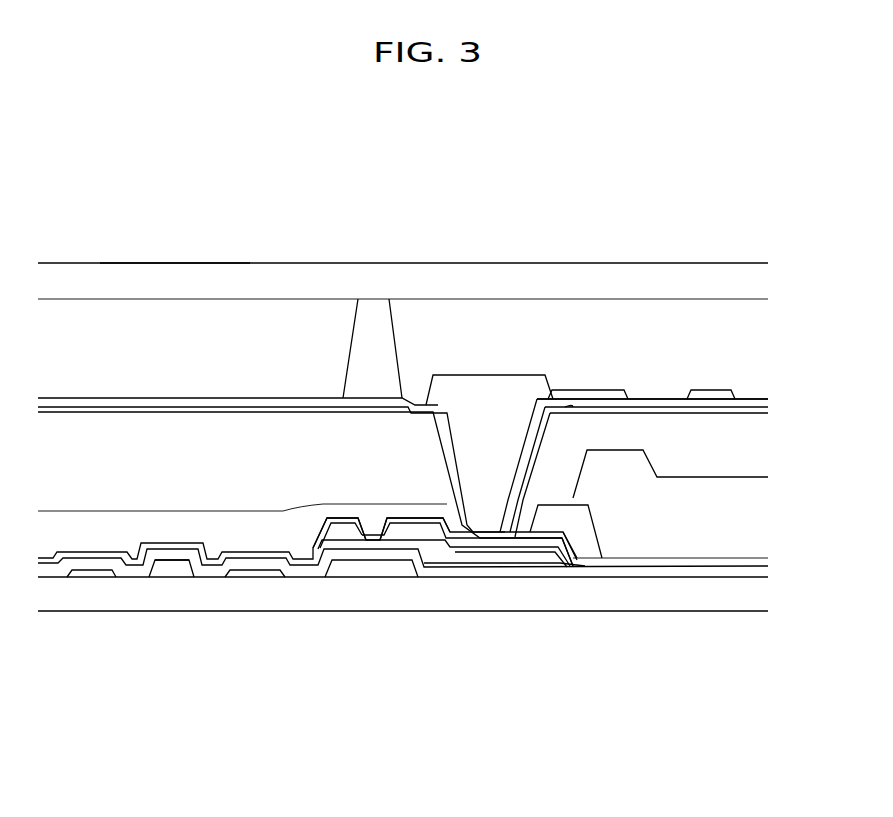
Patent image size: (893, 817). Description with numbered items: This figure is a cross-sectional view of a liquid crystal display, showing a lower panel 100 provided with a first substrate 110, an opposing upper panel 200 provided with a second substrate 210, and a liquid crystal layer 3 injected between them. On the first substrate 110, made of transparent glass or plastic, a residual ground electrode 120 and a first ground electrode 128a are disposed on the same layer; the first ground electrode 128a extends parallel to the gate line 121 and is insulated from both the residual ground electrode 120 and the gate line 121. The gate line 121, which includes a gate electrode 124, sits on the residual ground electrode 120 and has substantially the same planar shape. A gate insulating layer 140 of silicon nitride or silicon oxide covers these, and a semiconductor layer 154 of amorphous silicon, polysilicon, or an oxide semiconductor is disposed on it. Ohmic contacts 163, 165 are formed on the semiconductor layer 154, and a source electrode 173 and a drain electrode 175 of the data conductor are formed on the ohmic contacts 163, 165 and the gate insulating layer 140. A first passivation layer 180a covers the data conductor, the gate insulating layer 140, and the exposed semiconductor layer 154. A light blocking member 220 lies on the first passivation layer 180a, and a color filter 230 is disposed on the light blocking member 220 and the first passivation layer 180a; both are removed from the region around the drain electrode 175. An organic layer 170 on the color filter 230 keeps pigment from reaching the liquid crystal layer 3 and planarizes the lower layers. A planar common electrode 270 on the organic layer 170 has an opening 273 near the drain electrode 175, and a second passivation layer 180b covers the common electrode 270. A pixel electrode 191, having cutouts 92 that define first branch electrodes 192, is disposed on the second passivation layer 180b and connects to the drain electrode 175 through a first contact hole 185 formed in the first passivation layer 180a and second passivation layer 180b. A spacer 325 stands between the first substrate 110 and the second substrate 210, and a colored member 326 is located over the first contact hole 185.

The liquid crystal layer 3 is at (778, 301).
The cutouts 92 is at (683, 393).
The lower panel 100 is at (778, 404).
The first substrate 110 is at (465, 596).
The residual ground electrode 120 is at (159, 572).
The gate line 121 is at (180, 563).
The gate electrode 124 is at (370, 567).
The first ground electrode 128a is at (91, 573).
The gate insulating layer 140 is at (620, 570).
The semiconductor layer 154 is at (397, 545).
The ohmic contact 163 is at (333, 522).
The ohmic contact 165 is at (398, 536).
The organic layer 170 is at (229, 440).
The source electrode 173 is at (343, 528).
The drain electrode 175 is at (418, 530).
The first passivation layer 180a is at (526, 536).
The second passivation layer 180b is at (100, 406).
The first contact hole 185 is at (500, 530).
The pixel electrode 191 is at (612, 396).
The first branch electrodes 192 is at (714, 391).
The upper panel 200 is at (778, 263).
The second substrate 210 is at (175, 281).
The light blocking member 220 is at (113, 527).
The color filter 230 is at (737, 538).
The common electrode 270 is at (172, 412).
The opening 273 is at (568, 410).
The spacer 325 is at (358, 346).
The colored member 326 is at (453, 392).